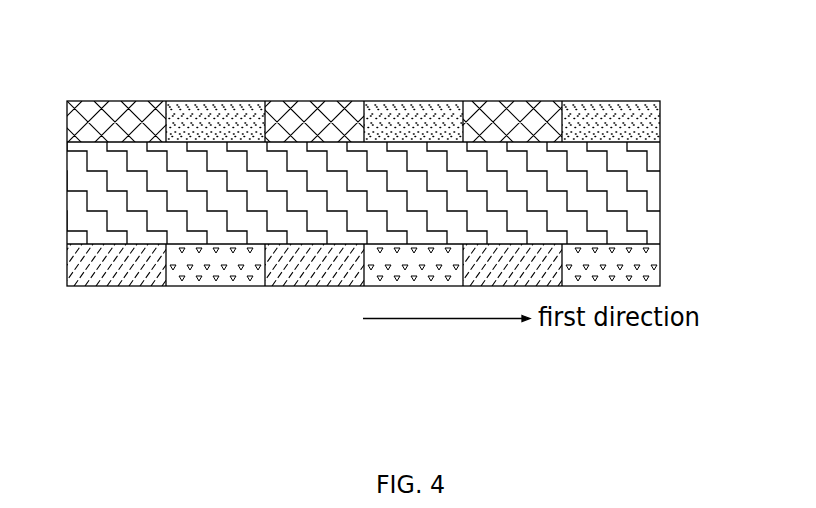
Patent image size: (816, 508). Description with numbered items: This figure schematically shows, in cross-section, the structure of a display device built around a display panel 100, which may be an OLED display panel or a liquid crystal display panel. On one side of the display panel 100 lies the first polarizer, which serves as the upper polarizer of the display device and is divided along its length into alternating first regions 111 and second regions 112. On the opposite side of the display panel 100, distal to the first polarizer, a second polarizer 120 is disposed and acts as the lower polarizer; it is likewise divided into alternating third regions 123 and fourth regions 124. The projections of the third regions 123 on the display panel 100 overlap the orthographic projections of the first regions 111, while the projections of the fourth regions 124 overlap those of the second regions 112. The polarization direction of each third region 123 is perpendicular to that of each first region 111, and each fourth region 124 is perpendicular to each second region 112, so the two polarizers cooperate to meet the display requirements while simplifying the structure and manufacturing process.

The display panel 100 is at (598, 212).
The first regions 111 is at (129, 122).
The second regions 112 is at (409, 120).
The second polarizer 120 is at (353, 336).
The third regions 123 is at (124, 264).
The fourth regions 124 is at (413, 305).